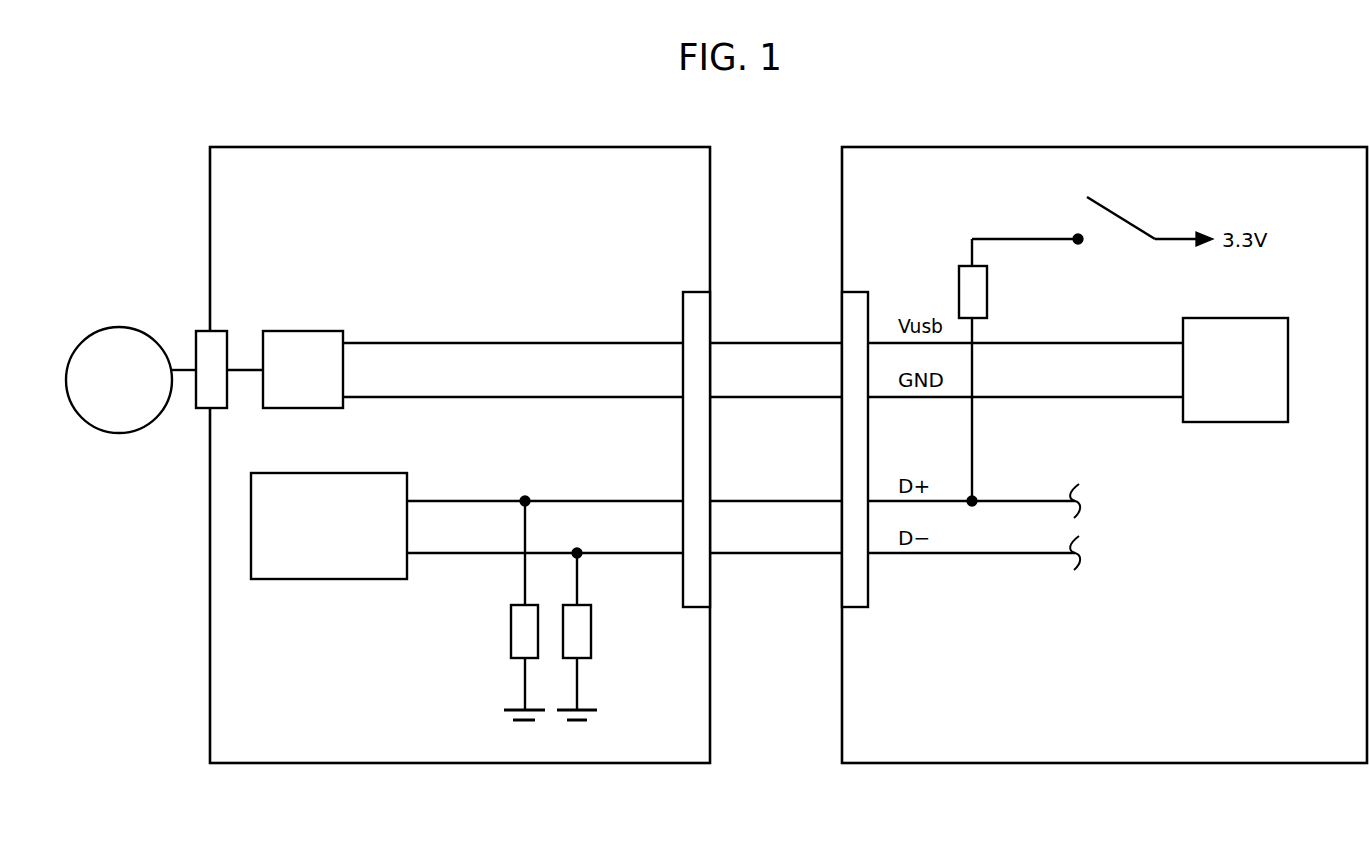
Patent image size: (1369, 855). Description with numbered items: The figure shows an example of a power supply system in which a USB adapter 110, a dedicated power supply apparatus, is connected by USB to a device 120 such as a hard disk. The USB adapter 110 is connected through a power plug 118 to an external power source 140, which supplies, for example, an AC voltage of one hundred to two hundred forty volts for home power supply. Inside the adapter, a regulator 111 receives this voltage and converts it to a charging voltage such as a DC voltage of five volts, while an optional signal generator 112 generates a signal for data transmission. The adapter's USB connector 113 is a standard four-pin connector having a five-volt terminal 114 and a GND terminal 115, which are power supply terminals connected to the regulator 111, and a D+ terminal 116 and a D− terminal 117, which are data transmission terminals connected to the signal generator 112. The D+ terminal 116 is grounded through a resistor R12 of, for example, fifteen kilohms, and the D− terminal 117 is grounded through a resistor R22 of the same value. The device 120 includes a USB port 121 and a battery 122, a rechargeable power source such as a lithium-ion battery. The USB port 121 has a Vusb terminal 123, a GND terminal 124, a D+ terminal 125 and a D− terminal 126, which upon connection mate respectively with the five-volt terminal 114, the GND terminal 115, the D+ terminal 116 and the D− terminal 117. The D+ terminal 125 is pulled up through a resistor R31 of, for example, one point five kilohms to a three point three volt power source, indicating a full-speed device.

The USB adapter 110 is at (596, 146).
The device 120 is at (1280, 146).
The external power source 140 is at (117, 328).
The power plug 118 is at (222, 330).
The regulator 111 is at (304, 330).
The signal generator 112 is at (343, 580).
The USB connector 113 is at (692, 290).
The +5V terminal 114 is at (464, 342).
The GND terminal 115 is at (464, 396).
The D+ terminal 116 is at (441, 500).
The D− terminal 117 is at (441, 552).
The USB port 121 is at (853, 290).
The battery 122 is at (1290, 334).
The Vusb terminal 123 is at (1075, 342).
The GND terminal 124 is at (1075, 396).
The D+ terminal 125 is at (1031, 500).
The D− terminal 126 is at (1025, 552).
The resistor R12 is at (510, 630).
The resistor R22 is at (592, 628).
The resistor R31 is at (987, 292).